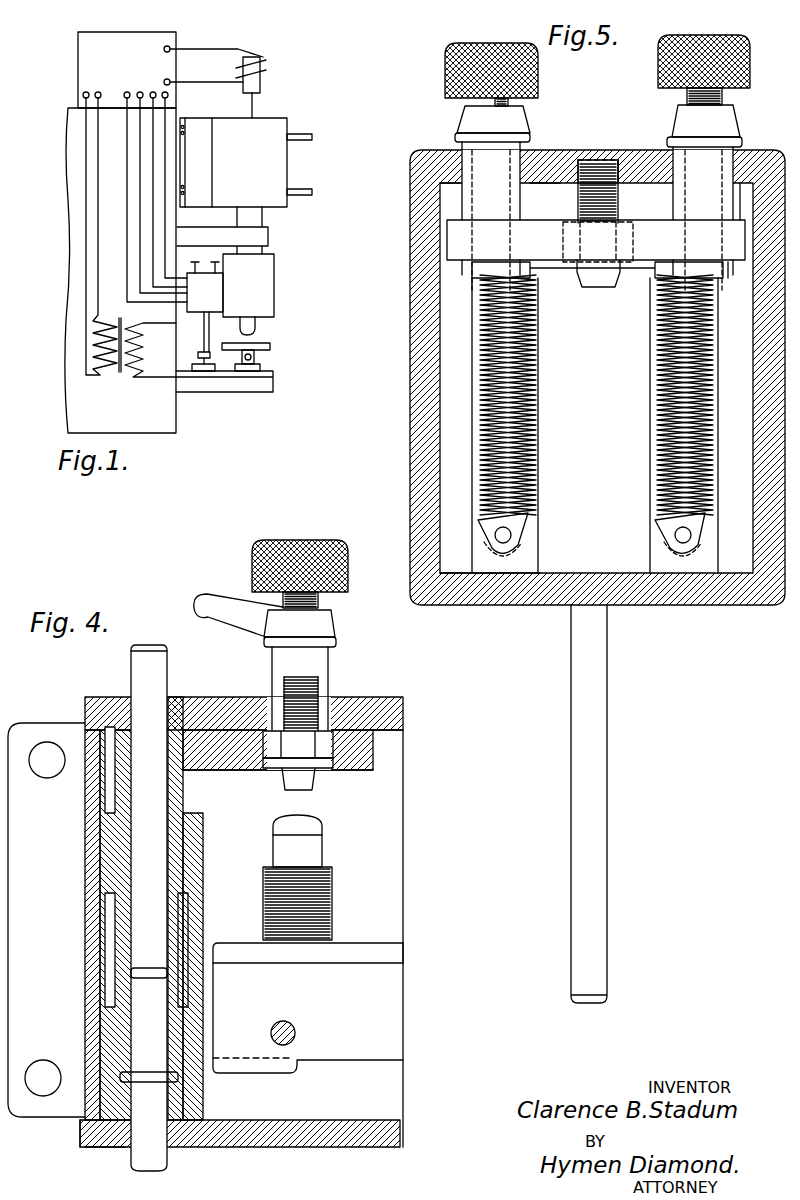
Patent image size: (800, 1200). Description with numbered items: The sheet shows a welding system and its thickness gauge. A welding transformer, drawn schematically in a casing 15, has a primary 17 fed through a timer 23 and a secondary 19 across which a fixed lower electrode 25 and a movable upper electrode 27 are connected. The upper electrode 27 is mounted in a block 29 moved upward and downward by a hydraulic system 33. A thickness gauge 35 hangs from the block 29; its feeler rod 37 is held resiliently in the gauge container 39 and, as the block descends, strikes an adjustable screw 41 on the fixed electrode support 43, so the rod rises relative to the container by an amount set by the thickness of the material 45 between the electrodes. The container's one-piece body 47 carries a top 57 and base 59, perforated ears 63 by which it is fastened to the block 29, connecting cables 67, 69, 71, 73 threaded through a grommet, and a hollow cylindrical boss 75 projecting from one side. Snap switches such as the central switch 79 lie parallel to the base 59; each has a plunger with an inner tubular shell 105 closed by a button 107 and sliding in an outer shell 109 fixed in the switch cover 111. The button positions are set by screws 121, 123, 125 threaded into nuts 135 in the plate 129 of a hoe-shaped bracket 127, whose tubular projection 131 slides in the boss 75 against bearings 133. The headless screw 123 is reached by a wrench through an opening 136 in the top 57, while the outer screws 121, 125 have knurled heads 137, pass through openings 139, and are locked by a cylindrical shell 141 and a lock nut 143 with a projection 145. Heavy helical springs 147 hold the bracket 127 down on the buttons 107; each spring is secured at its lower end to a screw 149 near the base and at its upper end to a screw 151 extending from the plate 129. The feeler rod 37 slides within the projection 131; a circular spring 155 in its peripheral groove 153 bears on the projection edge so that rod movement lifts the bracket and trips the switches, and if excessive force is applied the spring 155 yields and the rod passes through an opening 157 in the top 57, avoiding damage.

In FIG. 1, the casing 15 is at (68, 405).
In FIG. 1, the primary 17 is at (104, 375).
In FIG. 1, the secondary 19 is at (140, 372).
In FIG. 1, the timer 23 is at (180, 40).
In FIG. 1, the lower electrode 25 is at (256, 356).
In FIG. 1, the upper electrode 27 is at (258, 326).
In FIG. 1, the block 29 is at (268, 262).
In FIG. 1, the hydraulic system 33 is at (268, 125).
In FIG. 1, the thickness gauge 35 is at (198, 312).
In FIG. 5, the thickness gauge 35 is at (472, 626).
In FIG. 4, the thickness gauge 35 is at (90, 1168).
In FIG. 1, the feeler rod 37 is at (199, 353).
In FIG. 5, the feeler rod 37 is at (606, 741).
In FIG. 4, the feeler rod 37 is at (131, 650).
In FIG. 5, the gauge container 39 is at (405, 606).
In FIG. 4, the gauge container 39 is at (80, 1135).
In FIG. 1, the adjustable screw 41 is at (208, 372).
In FIG. 1, the fixed electrode support 43 is at (274, 379).
In FIG. 1, the material 45 is at (232, 345).
In FIG. 5, the body 47 is at (420, 470).
In FIG. 4, the body 47 is at (85, 995).
In FIG. 5, the top 57 is at (556, 158).
In FIG. 4, the top 57 is at (384, 708).
In FIG. 5, the base 59 is at (510, 608).
In FIG. 4, the base 59 is at (360, 1145).
In FIG. 4, the perforated ears 63 is at (20, 775).
In FIG. 1, the connecting cable 67 is at (127, 168).
In FIG. 1, the connecting cable 69 is at (140, 193).
In FIG. 1, the connecting cable 71 is at (153, 230).
In FIG. 1, the connecting cable 73 is at (165, 255).
In FIG. 5, the elongated boss 75 is at (632, 582).
In FIG. 4, the elongated boss 75 is at (200, 1105).
In FIG. 4, the snap switch 79 is at (398, 985).
In FIG. 4, the tubular shell 105 is at (312, 846).
In FIG. 4, the button 107 is at (315, 823).
In FIG. 4, the outer shell 109 is at (333, 889).
In FIG. 4, the cover 111 is at (378, 940).
In FIG. 5, the adjustable screw 121 is at (510, 100).
In FIG. 5, the screw 123 is at (614, 203).
In FIG. 4, the screw 123 is at (320, 686).
In FIG. 5, the adjustable screw 125 is at (725, 98).
In FIG. 5, the bracket 127 is at (732, 265).
In FIG. 4, the bracket 127 is at (222, 762).
In FIG. 5, the plate 129 is at (455, 237).
In FIG. 4, the plate 129 is at (232, 735).
In FIG. 4, the hollow tubular projection 131 is at (122, 735).
In FIG. 4, the bearings 133 is at (100, 838).
In FIG. 5, the nut 135 is at (618, 228).
In FIG. 4, the nut 135 is at (330, 755).
In FIG. 5, the opening 136 is at (592, 167).
In FIG. 5, the knurled head 137 is at (445, 72).
In FIG. 4, the knurled head 137 is at (348, 565).
In FIG. 5, the opening 139 is at (436, 150).
In FIG. 5, the cylindrical shell 141 is at (522, 152).
In FIG. 4, the cylindrical shell 141 is at (330, 660).
In FIG. 5, the lock nut 143 is at (525, 122).
In FIG. 4, the lock nut 143 is at (330, 612).
In FIG. 4, the projection 145 is at (203, 597).
In FIG. 5, the helical spring 147 is at (536, 483).
In FIG. 5, the screw 149 is at (512, 540).
In FIG. 5, the plate 151 is at (478, 268).
In FIG. 4, the peripheral groove 153 is at (148, 978).
In FIG. 4, the circular spring 155 is at (148, 1082).
In FIG. 4, the opening 157 is at (170, 700).